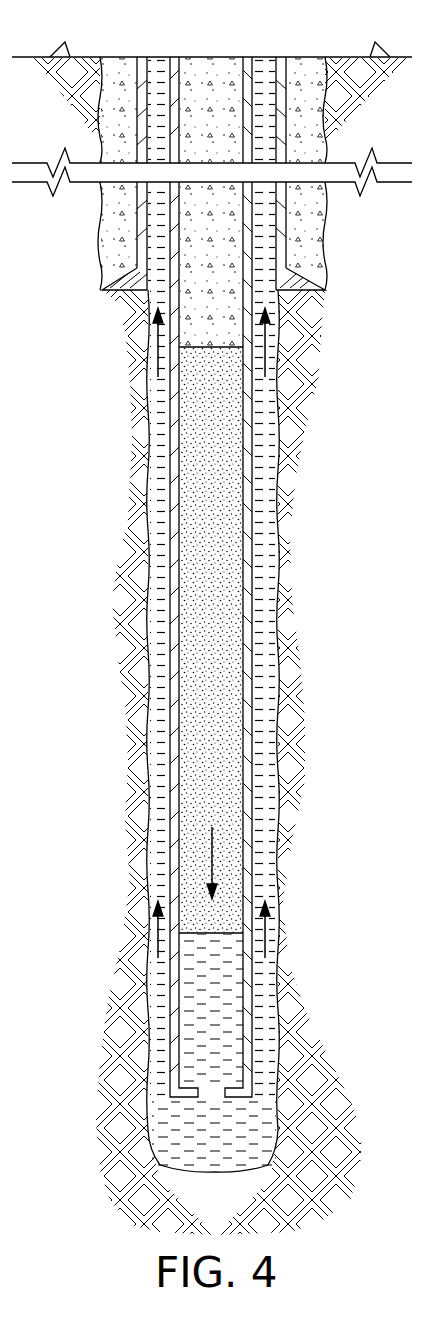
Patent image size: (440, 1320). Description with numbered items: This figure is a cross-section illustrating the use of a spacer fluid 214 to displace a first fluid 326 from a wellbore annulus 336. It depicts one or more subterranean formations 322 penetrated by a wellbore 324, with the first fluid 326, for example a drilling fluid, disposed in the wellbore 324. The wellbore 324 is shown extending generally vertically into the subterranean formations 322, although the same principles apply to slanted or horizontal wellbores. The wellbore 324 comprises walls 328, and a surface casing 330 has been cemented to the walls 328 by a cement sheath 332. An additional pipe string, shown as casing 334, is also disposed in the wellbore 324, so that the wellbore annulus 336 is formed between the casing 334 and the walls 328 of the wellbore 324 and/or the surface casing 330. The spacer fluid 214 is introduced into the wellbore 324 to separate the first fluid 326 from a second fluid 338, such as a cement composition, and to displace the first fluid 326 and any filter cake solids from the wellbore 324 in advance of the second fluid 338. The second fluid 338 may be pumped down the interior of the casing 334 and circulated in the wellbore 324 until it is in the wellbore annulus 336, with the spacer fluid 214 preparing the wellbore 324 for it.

The spacer fluid 214 is at (232, 525).
The subterranean formations 322 is at (128, 597).
The wellbore 324 is at (298, 574).
The first fluid 326 is at (158, 885).
The walls 328 is at (320, 232).
The surface casing 330 is at (139, 94).
The cement sheath 332 is at (100, 203).
The casing 334 is at (162, 788).
The wellbore annulus 336 is at (158, 845).
The second fluid 338 is at (213, 65).